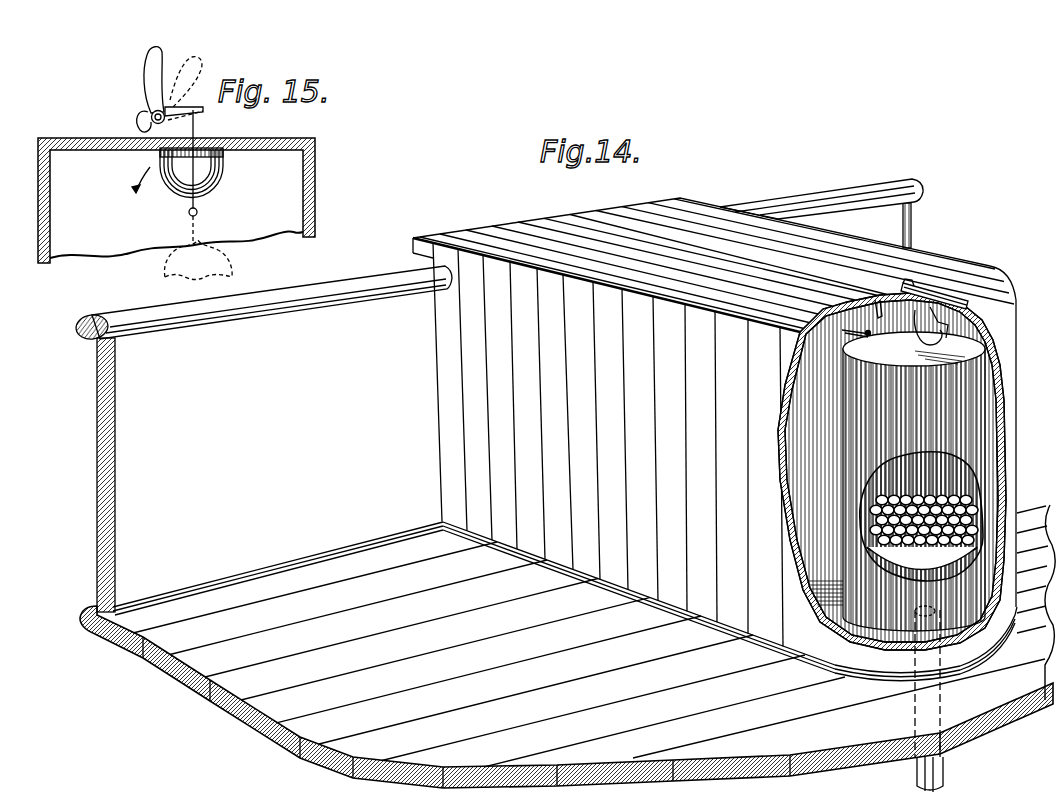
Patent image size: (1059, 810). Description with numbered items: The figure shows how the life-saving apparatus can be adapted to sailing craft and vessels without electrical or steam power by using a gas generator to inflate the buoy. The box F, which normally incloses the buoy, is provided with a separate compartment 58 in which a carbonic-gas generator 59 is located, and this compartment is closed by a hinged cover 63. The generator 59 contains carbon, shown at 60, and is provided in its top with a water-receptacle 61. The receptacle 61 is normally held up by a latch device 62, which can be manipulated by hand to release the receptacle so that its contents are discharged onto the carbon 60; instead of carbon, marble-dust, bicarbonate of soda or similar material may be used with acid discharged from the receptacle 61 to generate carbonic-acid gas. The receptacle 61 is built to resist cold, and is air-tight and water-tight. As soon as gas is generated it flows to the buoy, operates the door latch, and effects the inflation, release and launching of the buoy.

In FIG. 14, the box F is at (538, 200).
In FIG. 14, the separate compartment 58 is at (897, 471).
In FIG. 15, the carbonic-gas generator 59 is at (201, 200).
In FIG. 14, the carbonic-gas generator 59 is at (913, 465).
In FIG. 14, the carbon 60 is at (982, 533).
In FIG. 15, the water-receptacle 61 is at (223, 163).
In FIG. 15, the latch device 62 is at (170, 76).
In FIG. 14, the hinged cover 63 is at (943, 293).